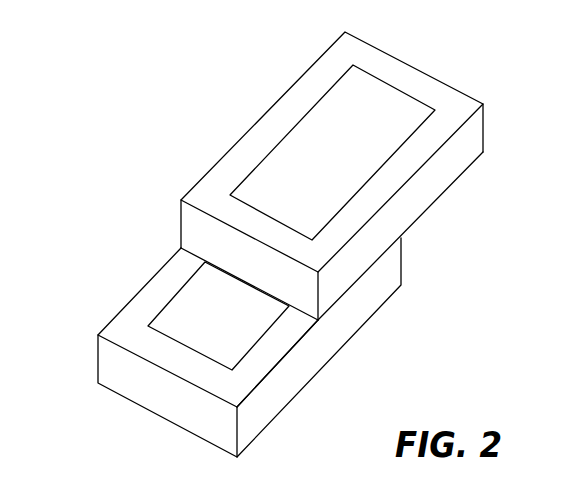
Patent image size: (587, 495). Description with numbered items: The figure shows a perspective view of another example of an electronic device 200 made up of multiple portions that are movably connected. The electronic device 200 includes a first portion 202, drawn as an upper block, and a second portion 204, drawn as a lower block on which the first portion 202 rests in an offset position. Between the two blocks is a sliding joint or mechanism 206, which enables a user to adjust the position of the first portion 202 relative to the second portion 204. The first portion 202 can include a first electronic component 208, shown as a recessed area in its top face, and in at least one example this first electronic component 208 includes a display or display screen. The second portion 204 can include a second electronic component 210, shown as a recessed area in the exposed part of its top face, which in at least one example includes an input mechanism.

The electronic device 200 is at (283, 244).
The first portion 202 is at (350, 176).
The second portion 204 is at (257, 347).
The sliding joint or mechanism 206 is at (342, 308).
The first electronic component 208 is at (382, 95).
The second electronic component 210 is at (182, 326).